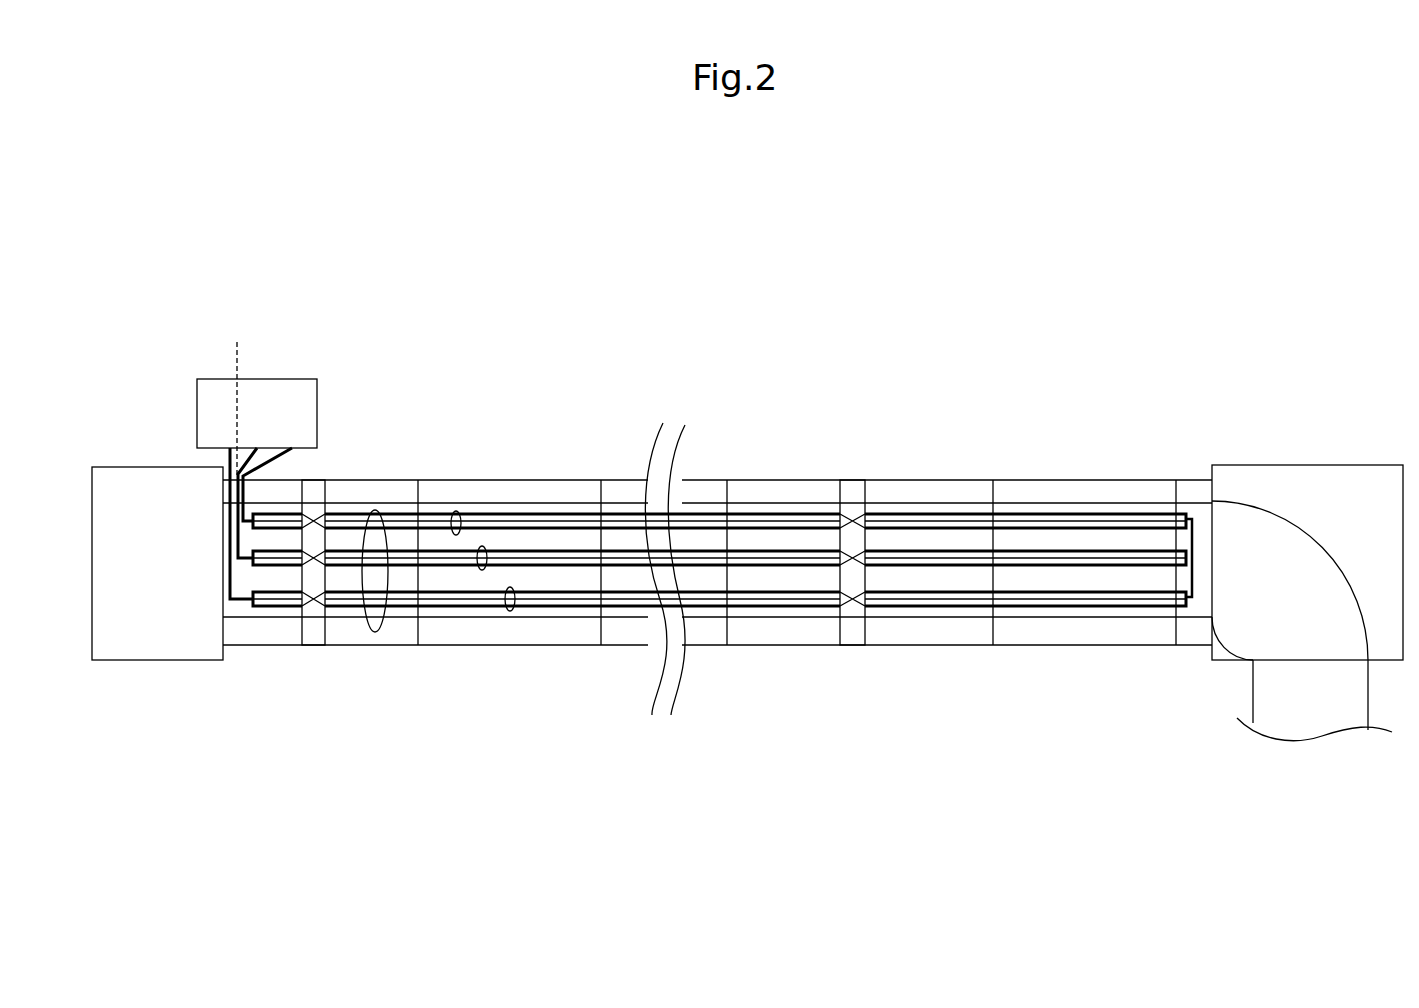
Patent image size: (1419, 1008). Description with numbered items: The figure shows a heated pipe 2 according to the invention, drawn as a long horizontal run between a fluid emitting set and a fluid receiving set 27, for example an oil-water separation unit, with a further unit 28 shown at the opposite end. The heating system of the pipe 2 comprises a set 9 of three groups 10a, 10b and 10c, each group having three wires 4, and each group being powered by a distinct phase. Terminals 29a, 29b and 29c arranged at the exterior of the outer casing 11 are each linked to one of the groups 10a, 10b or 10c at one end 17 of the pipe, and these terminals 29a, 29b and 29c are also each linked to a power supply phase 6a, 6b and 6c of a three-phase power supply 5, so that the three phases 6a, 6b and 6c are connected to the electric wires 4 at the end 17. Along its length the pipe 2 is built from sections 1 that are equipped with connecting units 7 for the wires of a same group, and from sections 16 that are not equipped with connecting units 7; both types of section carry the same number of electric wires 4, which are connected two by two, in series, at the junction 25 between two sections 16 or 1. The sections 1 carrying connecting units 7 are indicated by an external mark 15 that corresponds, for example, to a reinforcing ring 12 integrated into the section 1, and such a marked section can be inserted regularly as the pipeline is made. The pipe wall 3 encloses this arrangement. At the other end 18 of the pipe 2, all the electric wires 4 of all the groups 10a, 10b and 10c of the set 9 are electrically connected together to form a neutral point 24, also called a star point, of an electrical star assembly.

The section 1 is at (290, 652).
The pipe 2 is at (874, 241).
The outer pipe 3 is at (549, 500).
The wires 4 is at (1072, 553).
The power supply 5 is at (219, 379).
The power supply phase 6a is at (231, 514).
The power supply phase 6b is at (250, 493).
The power supply phase 6c is at (276, 475).
The connecting units 7 is at (853, 513).
The set 9 is at (375, 633).
The group 10a is at (508, 612).
The group 10b is at (483, 546).
The group 10c is at (457, 511).
The outer casing 11 is at (1013, 478).
The reinforcing ring 12 is at (313, 487).
The external mark 15 is at (850, 478).
The sections 16 is at (470, 708).
The end of the pipe 17 is at (225, 680).
The other end of the pipe 18 is at (1213, 677).
The neutral point 24 is at (1197, 555).
The junction 25 is at (418, 478).
The fluid receiving set 27 is at (157, 563).
The outlet elbow unit 28 is at (1307, 603).
The terminal 29a is at (225, 478).
The terminal 29b is at (237, 399).
The terminal 29c is at (248, 476).